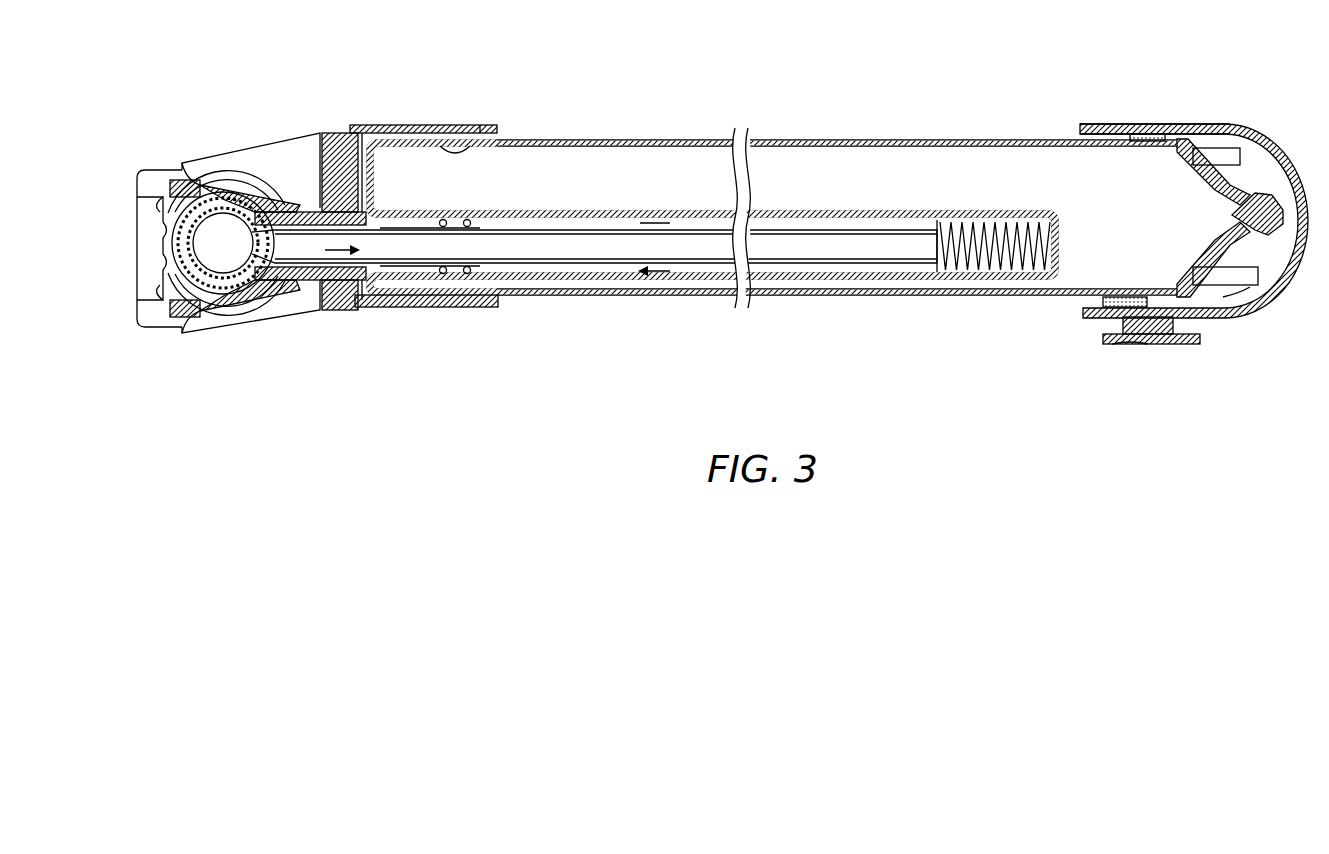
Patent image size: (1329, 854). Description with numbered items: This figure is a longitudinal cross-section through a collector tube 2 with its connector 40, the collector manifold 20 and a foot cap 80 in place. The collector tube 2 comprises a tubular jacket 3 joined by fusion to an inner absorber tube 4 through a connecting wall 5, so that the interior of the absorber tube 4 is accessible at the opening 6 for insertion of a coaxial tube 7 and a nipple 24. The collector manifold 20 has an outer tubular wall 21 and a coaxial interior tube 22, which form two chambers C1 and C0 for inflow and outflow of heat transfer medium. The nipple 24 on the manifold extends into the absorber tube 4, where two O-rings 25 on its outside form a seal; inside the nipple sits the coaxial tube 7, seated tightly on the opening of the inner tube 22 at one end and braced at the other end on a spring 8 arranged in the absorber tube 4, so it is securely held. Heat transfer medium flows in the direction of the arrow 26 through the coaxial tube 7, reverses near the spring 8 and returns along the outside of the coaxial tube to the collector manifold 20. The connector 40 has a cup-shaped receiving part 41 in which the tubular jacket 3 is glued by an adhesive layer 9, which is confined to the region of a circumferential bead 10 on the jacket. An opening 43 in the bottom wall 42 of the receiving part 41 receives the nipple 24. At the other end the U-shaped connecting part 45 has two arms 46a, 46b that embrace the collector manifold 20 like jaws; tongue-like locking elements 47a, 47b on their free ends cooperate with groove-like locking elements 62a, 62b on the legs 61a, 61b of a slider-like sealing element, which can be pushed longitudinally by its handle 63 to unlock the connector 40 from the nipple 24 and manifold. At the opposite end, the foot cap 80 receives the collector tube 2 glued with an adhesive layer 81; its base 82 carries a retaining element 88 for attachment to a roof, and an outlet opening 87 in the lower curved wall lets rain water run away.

The collector tube 2 is at (832, 124).
The tubular jacket 3 is at (656, 140).
The absorber tube 4 is at (1056, 212).
The connecting wall 5 is at (408, 148).
The opening 6 is at (343, 163).
The coaxial tube 7 is at (598, 270).
The spring 8 is at (973, 270).
The adhesive layer 9 is at (478, 128).
The circumferential bead 10 is at (500, 146).
The collector manifold 20 is at (227, 327).
The outer tubular wall 21 is at (243, 323).
The coaxial interior tube 22 is at (270, 317).
The nipple 24 is at (440, 273).
The O-rings 25 is at (472, 293).
The arrow 26 is at (310, 285).
The connector 40 is at (340, 100).
The cup-shaped receiving part 41 is at (385, 128).
The bottom wall 42 is at (355, 135).
The opening 43 is at (363, 300).
The U-shaped connecting part 45 is at (280, 198).
The arm 46a is at (223, 183).
The arm 46b is at (237, 333).
The locking element 47a is at (187, 168).
The locking element 47b is at (187, 340).
The leg 61a is at (160, 204).
The leg 61b is at (160, 310).
The locking element 62a is at (160, 180).
The locking element 62b is at (178, 325).
The handle 63 is at (150, 264).
The chamber C0 is at (187, 265).
The chamber C1 is at (217, 239).
The foot cap 80 is at (1194, 112).
The adhesive layer 81 is at (1134, 125).
The base 82 is at (1147, 347).
The outlet opening 87 is at (1280, 288).
The retaining element 88 is at (1112, 346).